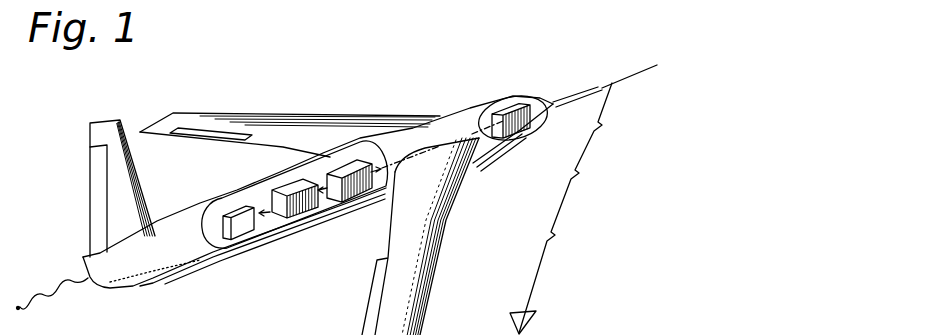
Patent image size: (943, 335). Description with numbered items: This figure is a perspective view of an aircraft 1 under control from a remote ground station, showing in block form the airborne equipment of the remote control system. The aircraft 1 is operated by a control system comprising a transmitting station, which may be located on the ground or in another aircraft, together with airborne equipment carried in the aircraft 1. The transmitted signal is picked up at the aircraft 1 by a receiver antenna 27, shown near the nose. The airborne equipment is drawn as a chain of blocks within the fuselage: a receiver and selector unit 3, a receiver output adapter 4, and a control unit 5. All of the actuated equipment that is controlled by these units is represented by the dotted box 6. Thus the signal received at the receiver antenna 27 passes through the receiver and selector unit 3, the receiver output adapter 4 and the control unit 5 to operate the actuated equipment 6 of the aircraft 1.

The aircraft 1 is at (483, 156).
The receiver and selector unit 3 is at (513, 101).
The receiver output adapter 4 is at (350, 160).
The control unit 5 is at (303, 210).
The actuated equipment 6 is at (247, 227).
The receiver antenna 27 is at (645, 70).